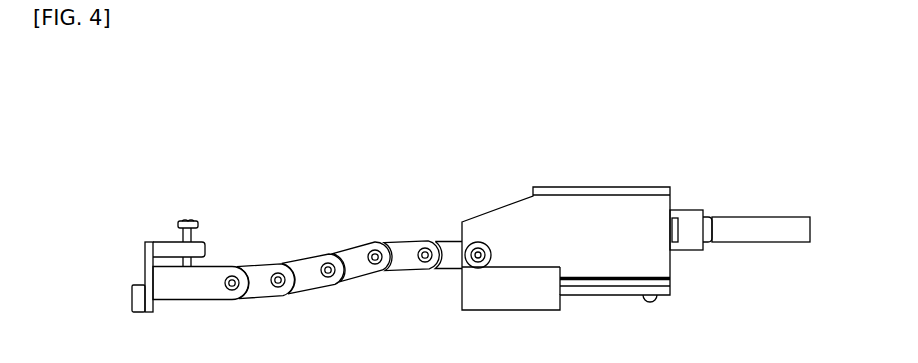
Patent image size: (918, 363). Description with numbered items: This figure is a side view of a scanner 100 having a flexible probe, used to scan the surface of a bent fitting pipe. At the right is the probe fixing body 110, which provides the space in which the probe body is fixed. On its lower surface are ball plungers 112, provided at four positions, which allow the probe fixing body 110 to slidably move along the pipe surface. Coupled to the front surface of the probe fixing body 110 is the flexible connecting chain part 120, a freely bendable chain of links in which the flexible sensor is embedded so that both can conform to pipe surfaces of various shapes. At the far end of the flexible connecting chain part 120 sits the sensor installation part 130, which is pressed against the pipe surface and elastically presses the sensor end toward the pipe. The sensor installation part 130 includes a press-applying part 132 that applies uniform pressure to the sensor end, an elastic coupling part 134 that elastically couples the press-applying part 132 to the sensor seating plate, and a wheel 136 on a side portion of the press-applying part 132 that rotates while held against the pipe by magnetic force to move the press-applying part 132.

The scanner 100 is at (660, 150).
The probe fixing body 110 is at (577, 215).
The ball plunger 112 is at (648, 303).
The flexible connecting chain part 120 is at (350, 238).
The sensor installation part 130 is at (132, 138).
The press-applying part 132 is at (170, 247).
The elastic coupling part 134 is at (193, 223).
The wheel 136 is at (136, 285).